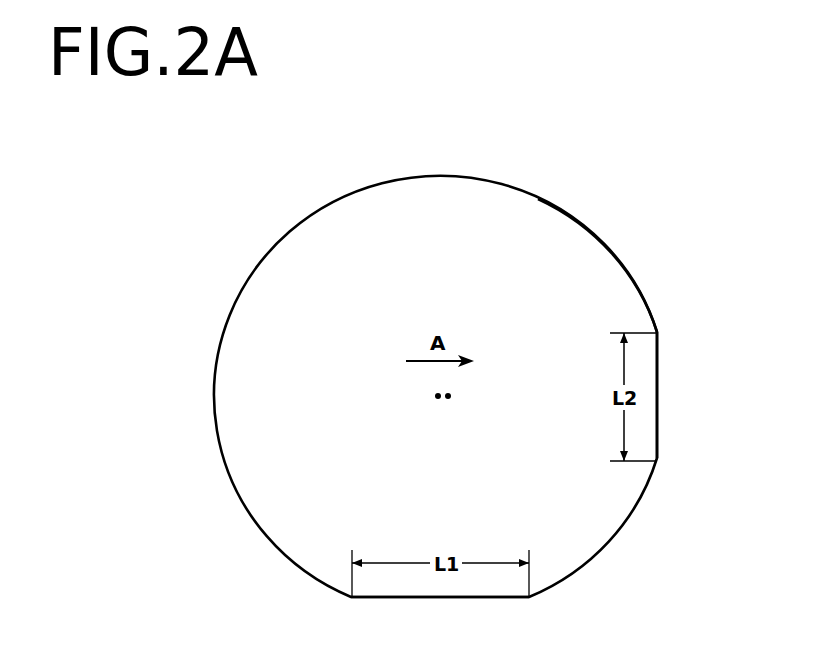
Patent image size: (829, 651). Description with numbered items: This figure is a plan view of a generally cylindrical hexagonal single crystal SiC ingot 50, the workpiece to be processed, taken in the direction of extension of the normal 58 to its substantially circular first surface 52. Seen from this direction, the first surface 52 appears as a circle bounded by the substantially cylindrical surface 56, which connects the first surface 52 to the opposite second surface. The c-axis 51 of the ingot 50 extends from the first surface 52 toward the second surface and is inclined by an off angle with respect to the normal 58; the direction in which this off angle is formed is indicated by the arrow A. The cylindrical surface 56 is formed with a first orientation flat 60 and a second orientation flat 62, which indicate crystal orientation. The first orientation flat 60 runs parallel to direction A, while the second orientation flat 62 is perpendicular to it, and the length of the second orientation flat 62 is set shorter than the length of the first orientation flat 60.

The single crystal SiC ingot 50 is at (248, 273).
The c-axis 51 is at (450, 398).
The first surface 52 is at (513, 222).
The cylindrical surface 56 is at (612, 249).
The normal 58 is at (436, 398).
The first orientation flat 60 is at (480, 599).
The second orientation flat 62 is at (659, 397).